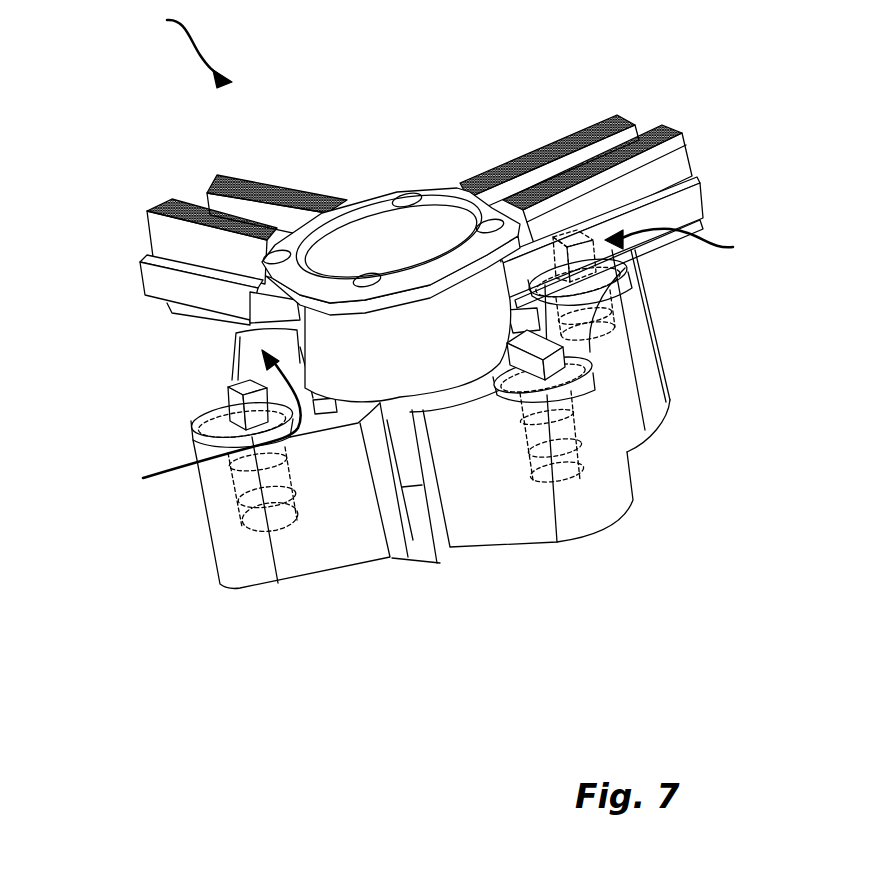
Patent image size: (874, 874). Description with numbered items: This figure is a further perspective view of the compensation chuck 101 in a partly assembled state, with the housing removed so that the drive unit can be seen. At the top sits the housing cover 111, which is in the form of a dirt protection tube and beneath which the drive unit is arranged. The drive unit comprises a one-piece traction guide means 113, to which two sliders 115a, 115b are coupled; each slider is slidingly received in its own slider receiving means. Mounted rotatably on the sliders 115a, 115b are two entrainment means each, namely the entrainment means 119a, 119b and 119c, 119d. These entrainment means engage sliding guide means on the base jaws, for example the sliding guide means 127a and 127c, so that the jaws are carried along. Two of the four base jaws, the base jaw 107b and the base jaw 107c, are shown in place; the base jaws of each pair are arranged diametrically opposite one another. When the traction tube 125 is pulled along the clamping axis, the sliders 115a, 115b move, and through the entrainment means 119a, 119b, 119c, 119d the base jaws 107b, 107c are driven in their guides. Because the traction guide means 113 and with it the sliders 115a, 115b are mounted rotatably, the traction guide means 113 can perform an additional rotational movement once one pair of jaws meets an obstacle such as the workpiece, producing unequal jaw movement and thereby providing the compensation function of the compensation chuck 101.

The compensation chuck 101 is at (415, 351).
The base jaw 107b is at (665, 163).
The base jaw 107c is at (192, 242).
The housing cover 111 is at (375, 207).
The traction guide means 113 is at (405, 443).
The slider 115a is at (498, 478).
The slider 115b is at (325, 540).
The entrainment means 119a is at (533, 350).
The entrainment means 119b is at (577, 277).
The entrainment means 119c is at (253, 330).
The entrainment means 119d is at (242, 397).
The traction tube 125 is at (443, 320).
The sliding guide means 127a is at (704, 237).
The sliding guide means 127c is at (197, 424).